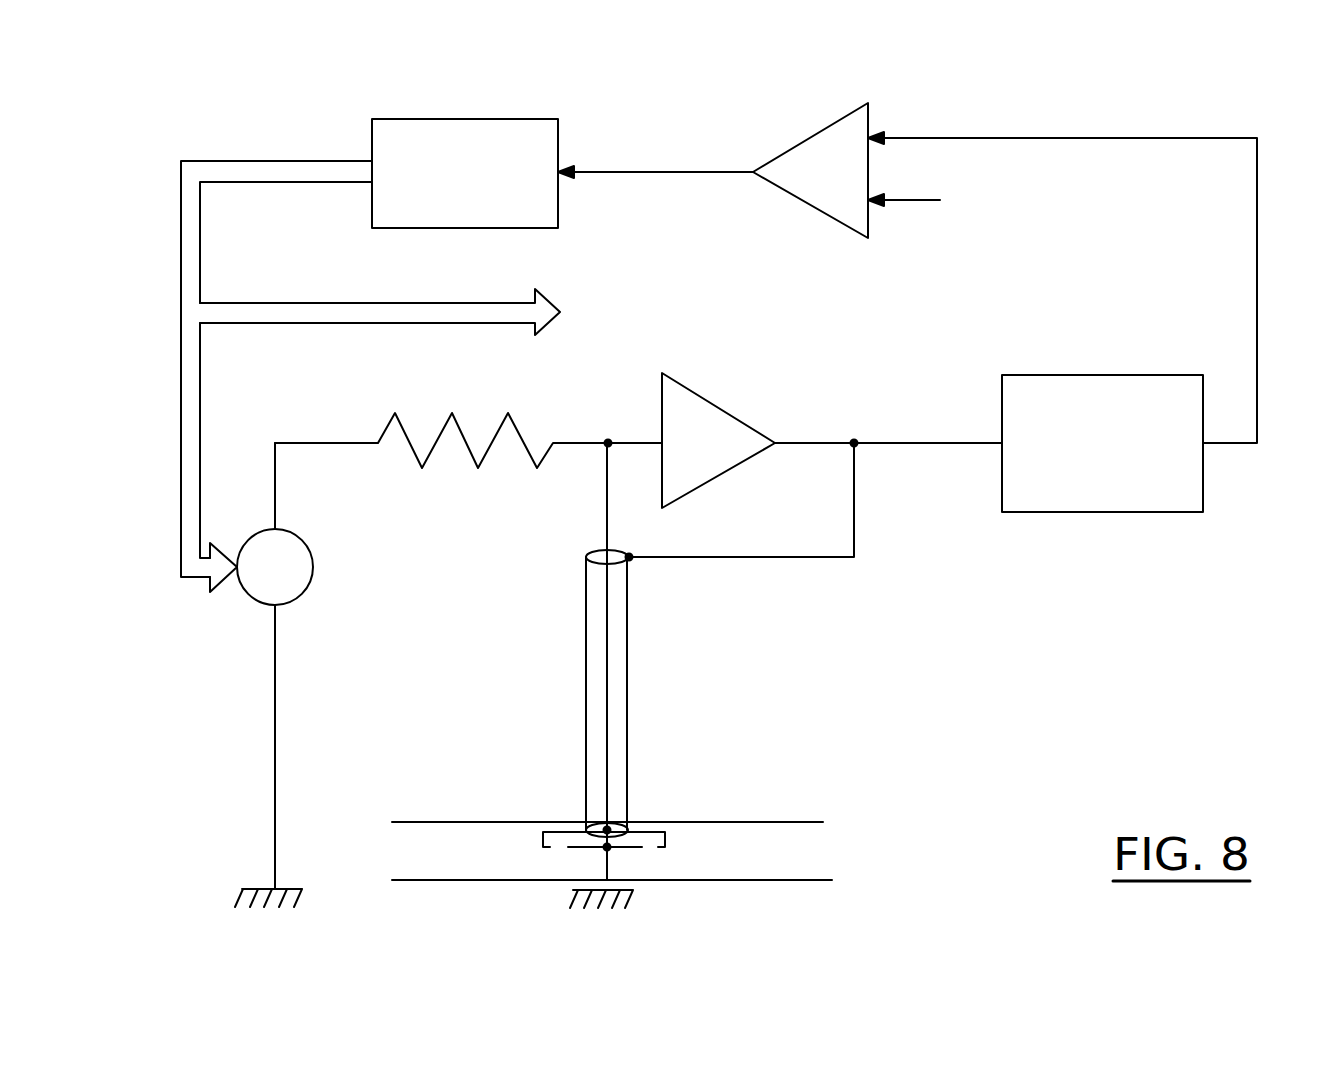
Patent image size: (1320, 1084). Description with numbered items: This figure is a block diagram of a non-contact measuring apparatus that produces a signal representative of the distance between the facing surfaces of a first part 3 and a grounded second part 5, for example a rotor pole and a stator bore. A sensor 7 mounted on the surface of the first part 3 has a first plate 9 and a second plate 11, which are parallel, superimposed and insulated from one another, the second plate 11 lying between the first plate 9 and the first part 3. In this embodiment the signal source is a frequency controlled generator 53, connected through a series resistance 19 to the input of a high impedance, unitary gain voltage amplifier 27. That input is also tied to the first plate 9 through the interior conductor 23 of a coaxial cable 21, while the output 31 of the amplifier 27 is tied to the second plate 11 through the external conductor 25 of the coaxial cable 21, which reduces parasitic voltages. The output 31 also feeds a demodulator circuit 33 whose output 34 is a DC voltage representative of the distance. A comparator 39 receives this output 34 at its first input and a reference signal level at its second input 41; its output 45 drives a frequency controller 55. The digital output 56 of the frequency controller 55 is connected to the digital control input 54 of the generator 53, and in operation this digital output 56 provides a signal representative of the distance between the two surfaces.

The first part 3 is at (410, 822).
The second part 5 is at (450, 882).
The sensor 7 is at (685, 840).
The first plate 9 is at (578, 847).
The second plate 11 is at (553, 832).
The resistance 19 is at (452, 413).
The coaxial cable 21 is at (556, 726).
The interior conductor 23 is at (607, 704).
The external conductor 25 is at (627, 637).
The voltage amplifier 27 is at (682, 458).
The output of the amplifier 31 is at (820, 433).
The demodulator circuit 33 is at (1082, 460).
The output of the demodulator circuit 34 is at (1065, 138).
The comparator 39 is at (812, 188).
The second input of the comparator 41 is at (935, 200).
The output of the comparator 45 is at (665, 165).
The frequency controlled generator 53 is at (313, 567).
The digital control input 54 is at (235, 570).
The frequency controller 55 is at (445, 191).
The digital output 56 is at (372, 182).